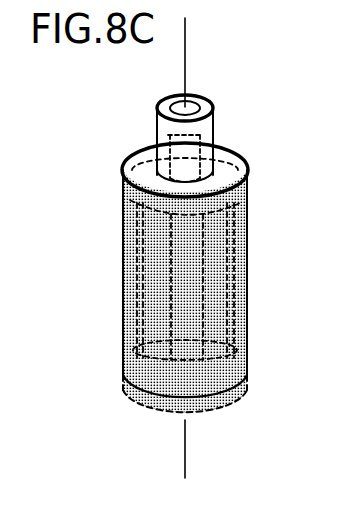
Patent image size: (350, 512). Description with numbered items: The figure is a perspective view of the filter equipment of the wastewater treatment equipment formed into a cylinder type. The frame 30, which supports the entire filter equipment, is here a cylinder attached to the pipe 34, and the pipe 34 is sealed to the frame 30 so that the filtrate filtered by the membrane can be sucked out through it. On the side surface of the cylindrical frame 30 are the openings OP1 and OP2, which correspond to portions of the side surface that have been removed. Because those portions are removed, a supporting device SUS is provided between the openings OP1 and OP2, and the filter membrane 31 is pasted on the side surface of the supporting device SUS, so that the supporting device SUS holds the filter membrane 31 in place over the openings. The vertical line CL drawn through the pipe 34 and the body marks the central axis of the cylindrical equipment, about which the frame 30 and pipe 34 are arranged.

The frame 30 is at (235, 262).
The filter membrane 31 is at (212, 368).
The pipe 34 is at (205, 127).
The opening OP1 is at (160, 307).
The opening OP2 is at (215, 312).
The center line CL is at (185, 62).
The supporting device SUS is at (170, 373).